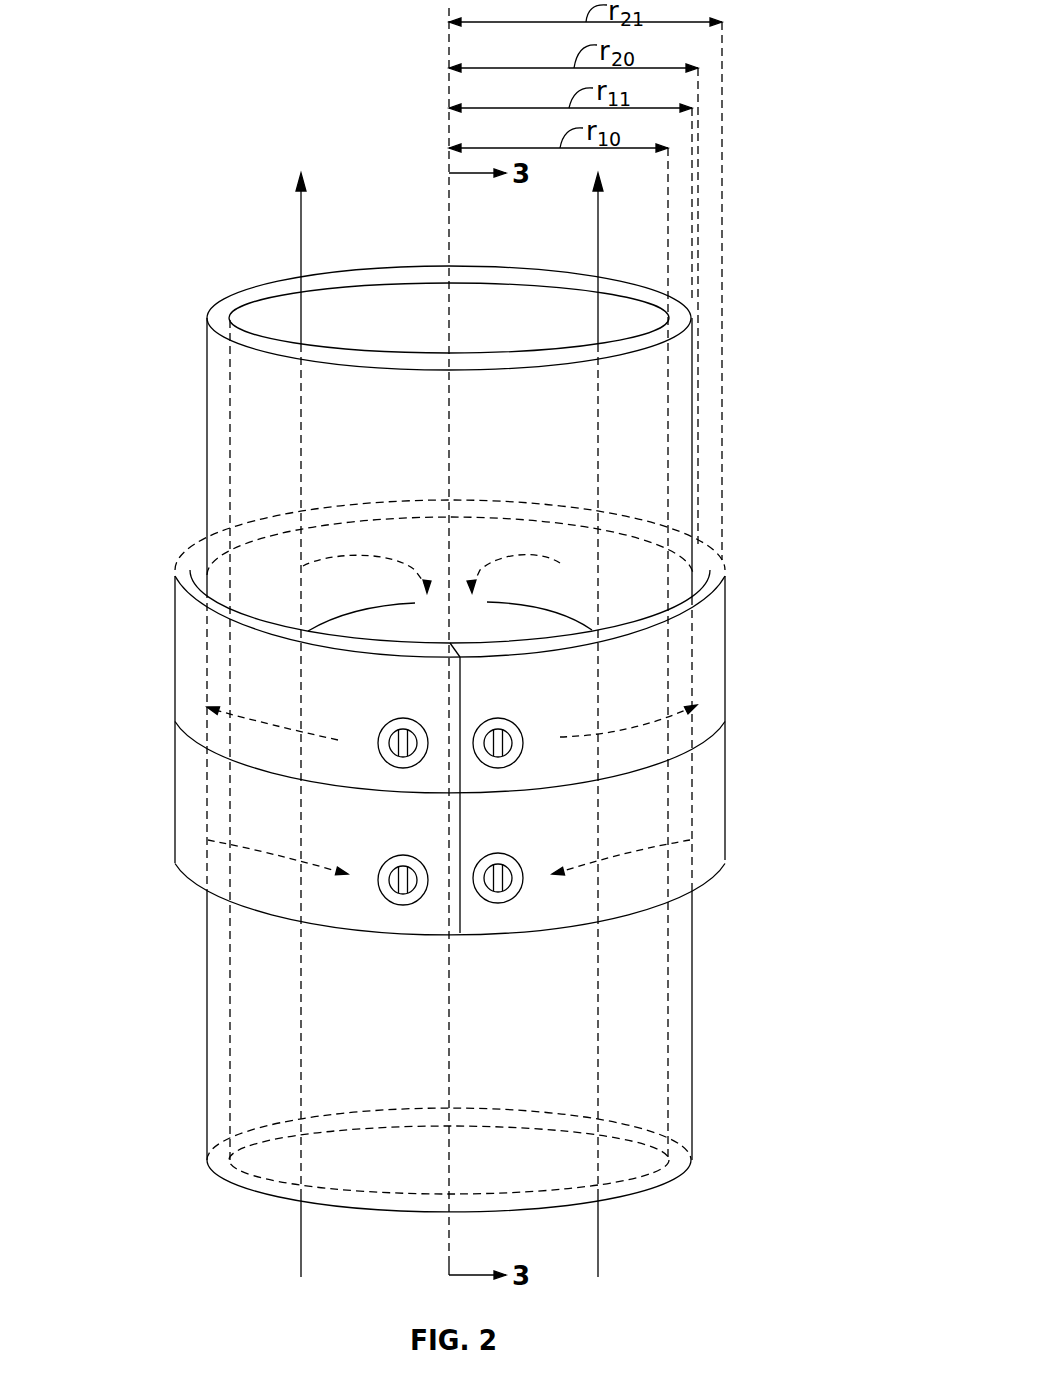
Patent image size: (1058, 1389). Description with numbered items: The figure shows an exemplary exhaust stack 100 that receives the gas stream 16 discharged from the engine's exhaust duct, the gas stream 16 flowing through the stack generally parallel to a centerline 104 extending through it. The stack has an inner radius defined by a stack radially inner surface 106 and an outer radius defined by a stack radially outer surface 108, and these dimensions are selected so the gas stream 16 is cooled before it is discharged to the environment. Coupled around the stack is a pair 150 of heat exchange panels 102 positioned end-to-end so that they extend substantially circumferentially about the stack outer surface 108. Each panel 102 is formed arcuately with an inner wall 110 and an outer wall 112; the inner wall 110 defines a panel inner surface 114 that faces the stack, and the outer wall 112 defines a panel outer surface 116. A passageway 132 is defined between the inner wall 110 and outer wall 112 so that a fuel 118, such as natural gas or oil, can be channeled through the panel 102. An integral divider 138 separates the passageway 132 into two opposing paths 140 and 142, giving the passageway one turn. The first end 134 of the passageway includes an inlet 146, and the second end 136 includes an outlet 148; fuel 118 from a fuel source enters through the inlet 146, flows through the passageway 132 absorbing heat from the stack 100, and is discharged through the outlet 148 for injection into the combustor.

The exhaust stack 100 is at (140, 108).
The inner wall 110 is at (222, 602).
The stack radially outer surface 108 is at (694, 1017).
The stack radially inner surface 106 is at (667, 1024).
The centerline 104 is at (449, 1240).
The gas stream 16 is at (301, 1240).
The heat exchange panel 102 is at (187, 692).
The outer wall 112 is at (186, 605).
The panel inner surface 114 is at (617, 627).
The first end of passageway 134 is at (330, 662).
The panel outer surface 116 is at (522, 698).
The integral divider 138 is at (188, 745).
The second end of passageway 136 is at (613, 902).
The first path 140 is at (705, 640).
The passageway 132 is at (190, 842).
The second path 142 is at (705, 858).
The inlet 146 is at (490, 764).
The outlet 148 is at (490, 900).
The pair of panels 150 is at (188, 910).
The fuel 118 is at (360, 555).